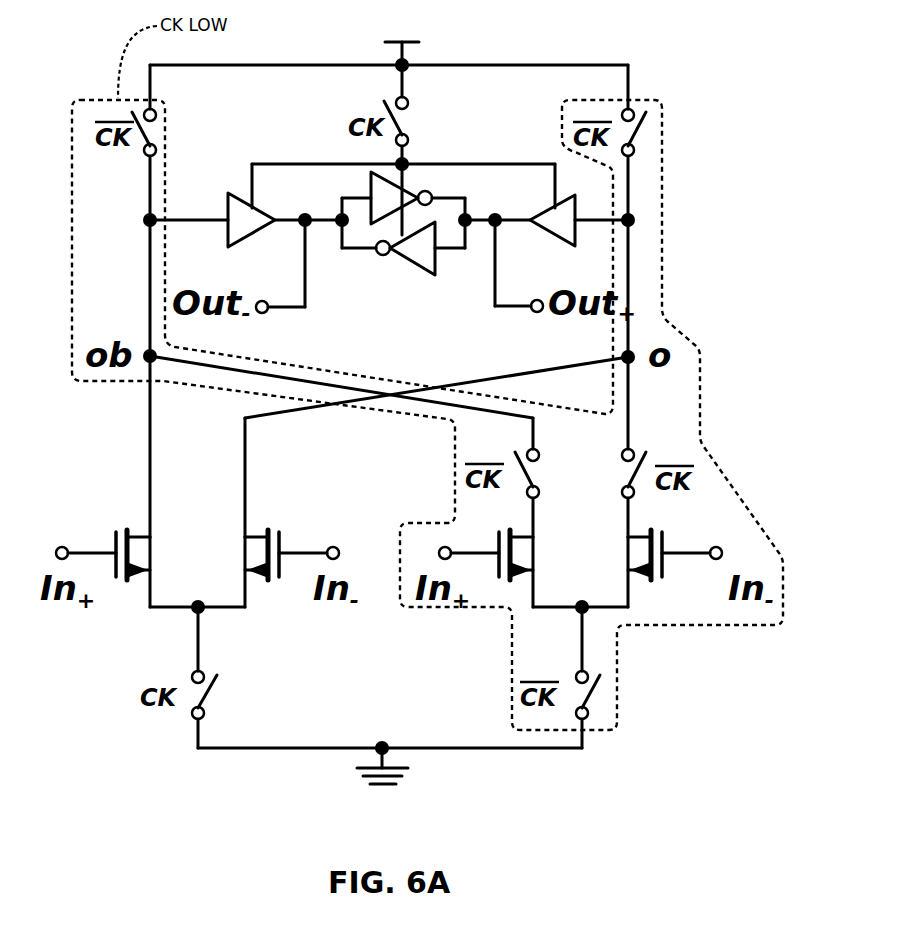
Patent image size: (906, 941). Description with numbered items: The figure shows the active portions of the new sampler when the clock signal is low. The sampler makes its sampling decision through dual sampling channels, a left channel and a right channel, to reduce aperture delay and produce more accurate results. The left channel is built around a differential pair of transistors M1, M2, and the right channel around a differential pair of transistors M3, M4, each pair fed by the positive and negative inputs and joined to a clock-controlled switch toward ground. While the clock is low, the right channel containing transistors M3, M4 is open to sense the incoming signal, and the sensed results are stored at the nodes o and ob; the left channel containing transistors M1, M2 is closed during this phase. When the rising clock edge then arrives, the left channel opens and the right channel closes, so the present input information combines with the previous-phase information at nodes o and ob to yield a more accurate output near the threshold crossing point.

The first input transistor M1 is at (127, 568).
The second input transistor M2 is at (268, 568).
The third input transistor M3 is at (510, 568).
The fourth input transistor M4 is at (652, 568).